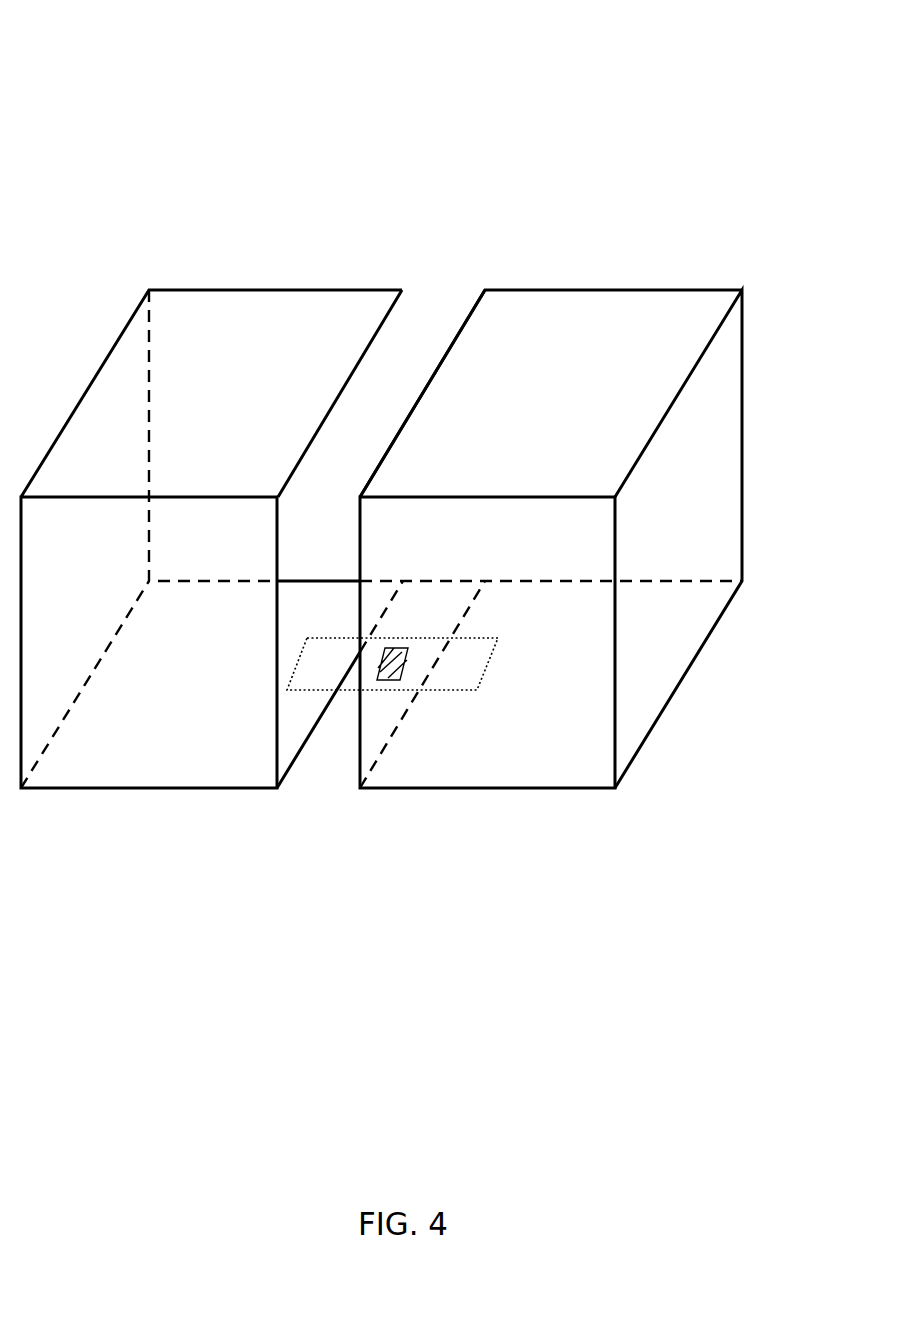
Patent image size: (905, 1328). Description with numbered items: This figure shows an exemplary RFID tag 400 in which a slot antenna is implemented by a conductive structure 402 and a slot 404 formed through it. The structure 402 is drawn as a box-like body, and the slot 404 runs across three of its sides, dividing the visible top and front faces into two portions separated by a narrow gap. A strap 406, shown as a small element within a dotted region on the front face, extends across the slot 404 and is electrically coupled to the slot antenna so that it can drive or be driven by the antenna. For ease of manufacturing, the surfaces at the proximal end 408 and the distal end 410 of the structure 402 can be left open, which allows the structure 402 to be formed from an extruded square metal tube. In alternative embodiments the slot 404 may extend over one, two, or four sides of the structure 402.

The RFID tag 400 is at (99, 81).
The structure 402 is at (678, 290).
The slot 404 is at (426, 304).
The strap 406 is at (462, 690).
The proximal end 408 is at (728, 492).
The distal end 410 is at (55, 419).